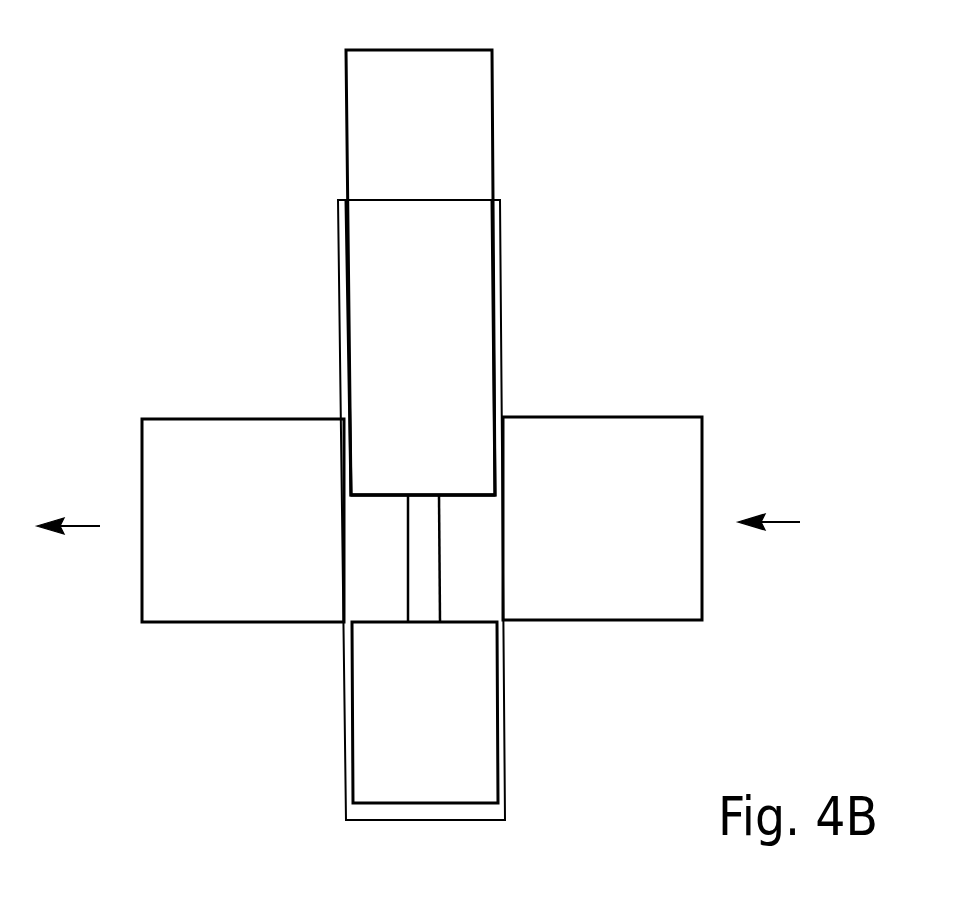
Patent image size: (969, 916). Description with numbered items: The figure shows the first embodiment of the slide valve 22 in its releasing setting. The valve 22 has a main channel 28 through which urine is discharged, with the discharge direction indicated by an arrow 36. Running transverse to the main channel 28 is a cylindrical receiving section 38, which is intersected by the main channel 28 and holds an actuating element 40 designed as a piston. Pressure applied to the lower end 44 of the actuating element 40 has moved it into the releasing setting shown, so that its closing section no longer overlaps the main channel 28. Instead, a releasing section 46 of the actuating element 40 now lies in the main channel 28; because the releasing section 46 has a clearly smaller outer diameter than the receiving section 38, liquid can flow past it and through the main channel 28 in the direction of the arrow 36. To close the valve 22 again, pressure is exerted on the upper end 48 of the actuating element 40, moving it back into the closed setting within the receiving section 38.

The valve 22 is at (649, 688).
The main channel 28 is at (702, 458).
The arrow 36 is at (85, 528).
The receiving section 38 is at (503, 343).
The actuating element 40 is at (370, 348).
The lower end 44 is at (479, 737).
The releasing section 46 is at (494, 589).
The upper end 48 is at (462, 82).